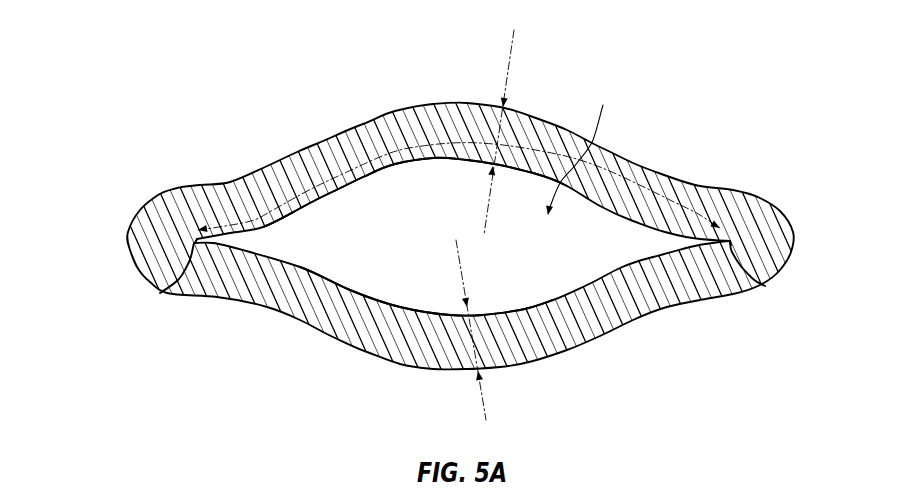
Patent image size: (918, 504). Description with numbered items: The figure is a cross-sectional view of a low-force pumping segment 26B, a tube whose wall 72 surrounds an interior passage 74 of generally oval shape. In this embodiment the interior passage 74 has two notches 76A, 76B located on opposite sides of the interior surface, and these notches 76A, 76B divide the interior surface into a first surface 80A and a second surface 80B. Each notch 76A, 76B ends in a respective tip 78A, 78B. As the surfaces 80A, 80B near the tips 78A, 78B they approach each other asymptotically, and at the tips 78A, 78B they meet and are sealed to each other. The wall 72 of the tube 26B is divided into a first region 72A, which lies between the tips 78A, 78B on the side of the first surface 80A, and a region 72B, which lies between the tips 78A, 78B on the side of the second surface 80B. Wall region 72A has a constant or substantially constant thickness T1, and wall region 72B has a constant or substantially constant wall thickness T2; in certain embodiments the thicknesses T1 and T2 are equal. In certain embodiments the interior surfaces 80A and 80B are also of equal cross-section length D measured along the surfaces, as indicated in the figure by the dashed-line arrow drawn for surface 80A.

The low-force pumping segment 26B is at (143, 51).
The wall 72 is at (141, 219).
The first region 72A is at (413, 105).
The region 72B is at (397, 338).
The interior passage 74 is at (581, 145).
The notch 76A is at (265, 238).
The notch 76B is at (647, 238).
The tip 78A is at (160, 294).
The tip 78B is at (767, 291).
The first surface 80A is at (388, 176).
The second surface 80B is at (365, 279).
The cross-section length D is at (327, 137).
The thickness T1 is at (511, 56).
The wall thickness T2 is at (481, 395).